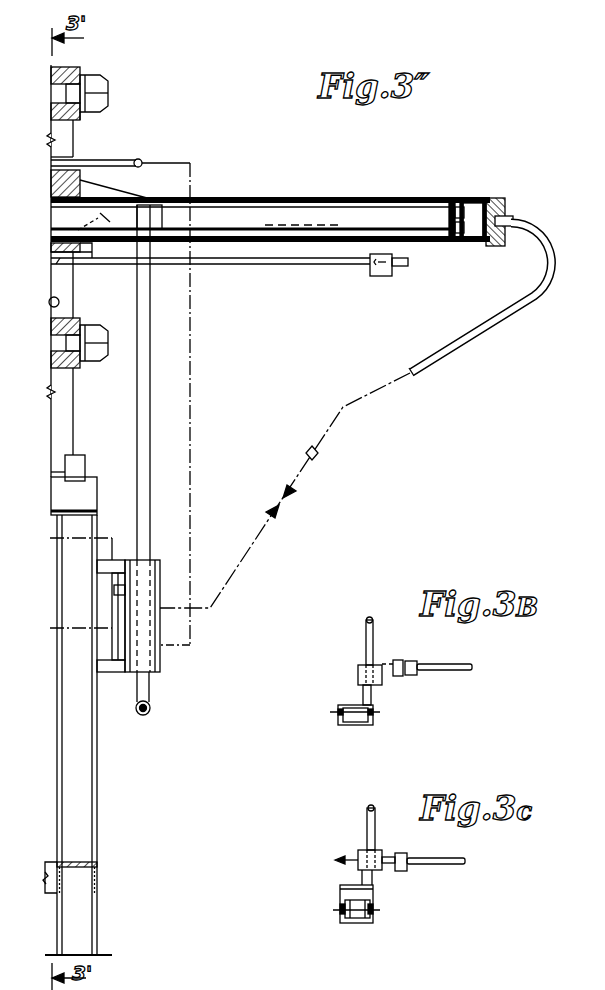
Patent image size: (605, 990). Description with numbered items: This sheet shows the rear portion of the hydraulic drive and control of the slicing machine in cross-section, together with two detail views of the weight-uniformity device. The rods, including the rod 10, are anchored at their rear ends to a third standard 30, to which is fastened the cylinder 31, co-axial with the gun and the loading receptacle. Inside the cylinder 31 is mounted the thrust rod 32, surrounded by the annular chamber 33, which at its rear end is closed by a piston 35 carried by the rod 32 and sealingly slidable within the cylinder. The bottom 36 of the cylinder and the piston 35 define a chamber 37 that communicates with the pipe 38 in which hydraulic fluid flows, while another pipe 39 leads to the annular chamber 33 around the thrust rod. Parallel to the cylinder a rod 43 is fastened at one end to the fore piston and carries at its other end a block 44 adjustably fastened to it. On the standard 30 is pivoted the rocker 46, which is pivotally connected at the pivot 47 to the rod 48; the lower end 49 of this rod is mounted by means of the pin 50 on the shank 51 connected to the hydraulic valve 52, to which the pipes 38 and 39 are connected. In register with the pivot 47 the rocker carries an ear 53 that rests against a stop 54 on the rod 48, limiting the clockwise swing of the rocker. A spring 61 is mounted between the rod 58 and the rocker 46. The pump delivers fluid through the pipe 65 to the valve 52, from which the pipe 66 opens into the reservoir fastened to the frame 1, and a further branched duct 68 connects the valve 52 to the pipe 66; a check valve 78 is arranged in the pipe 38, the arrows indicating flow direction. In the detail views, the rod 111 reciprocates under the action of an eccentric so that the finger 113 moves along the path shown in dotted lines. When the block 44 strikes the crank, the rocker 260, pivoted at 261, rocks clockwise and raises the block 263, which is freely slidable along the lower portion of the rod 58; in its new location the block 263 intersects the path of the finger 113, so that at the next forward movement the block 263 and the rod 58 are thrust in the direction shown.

The frame 1 is at (95, 477).
The rod 10 is at (77, 366).
The third standard 30 is at (72, 73).
The cylinder 31 is at (243, 198).
The thrust rod 32 is at (332, 214).
The annular chamber 33 is at (286, 201).
The piston 35 is at (453, 201).
The bottom 36 is at (506, 208).
The chamber 37 is at (480, 201).
The pipe 38 is at (551, 262).
The pipe 39 is at (116, 159).
The rod 43 is at (266, 266).
The block 44 is at (386, 277).
The rocker 46 is at (108, 191).
The pivot 47 is at (148, 197).
The rod 48 is at (148, 338).
The lower end 49 is at (138, 716).
The pin 50 is at (150, 712).
The shank 51 is at (151, 691).
The hydraulic valve 52 is at (160, 562).
The ear 53 is at (151, 219).
The stop 54 is at (121, 223).
The spring 61 is at (95, 212).
The pipe 65 is at (77, 629).
The pipe 66 is at (74, 541).
The branched duct 68 is at (94, 616).
The check valve 78 is at (319, 453).
In FIG. 3B, the rod 58 is at (365, 633).
In FIG. 3C, the rod 58 is at (376, 827).
In FIG. 3B, the rod 111 is at (449, 666).
In FIG. 3C, the rod 111 is at (441, 865).
In FIG. 3B, the finger 113 is at (404, 661).
In FIG. 3C, the finger 113 is at (399, 853).
In FIG. 3B, the rocker 260 is at (350, 706).
In FIG. 3C, the rocker 260 is at (348, 894).
In FIG. 3C, the pivot 261 is at (345, 913).
In FIG. 3B, the block 263 is at (358, 673).
In FIG. 3C, the block 263 is at (353, 848).